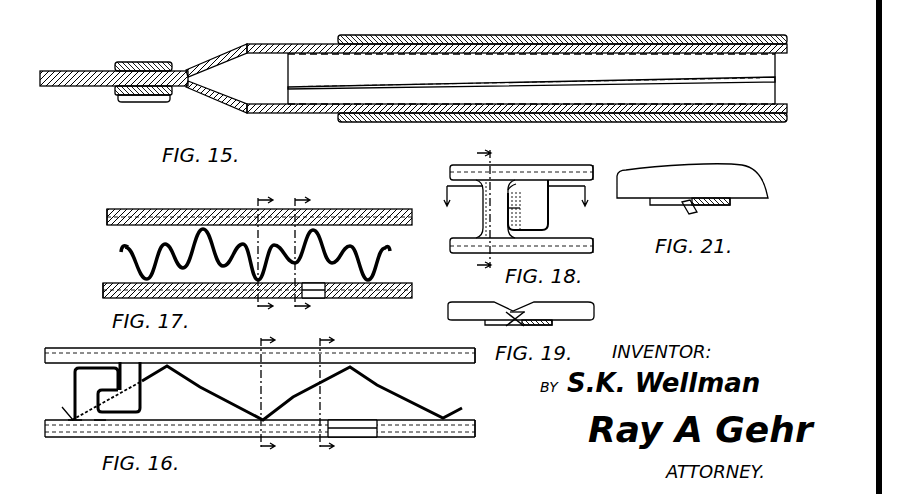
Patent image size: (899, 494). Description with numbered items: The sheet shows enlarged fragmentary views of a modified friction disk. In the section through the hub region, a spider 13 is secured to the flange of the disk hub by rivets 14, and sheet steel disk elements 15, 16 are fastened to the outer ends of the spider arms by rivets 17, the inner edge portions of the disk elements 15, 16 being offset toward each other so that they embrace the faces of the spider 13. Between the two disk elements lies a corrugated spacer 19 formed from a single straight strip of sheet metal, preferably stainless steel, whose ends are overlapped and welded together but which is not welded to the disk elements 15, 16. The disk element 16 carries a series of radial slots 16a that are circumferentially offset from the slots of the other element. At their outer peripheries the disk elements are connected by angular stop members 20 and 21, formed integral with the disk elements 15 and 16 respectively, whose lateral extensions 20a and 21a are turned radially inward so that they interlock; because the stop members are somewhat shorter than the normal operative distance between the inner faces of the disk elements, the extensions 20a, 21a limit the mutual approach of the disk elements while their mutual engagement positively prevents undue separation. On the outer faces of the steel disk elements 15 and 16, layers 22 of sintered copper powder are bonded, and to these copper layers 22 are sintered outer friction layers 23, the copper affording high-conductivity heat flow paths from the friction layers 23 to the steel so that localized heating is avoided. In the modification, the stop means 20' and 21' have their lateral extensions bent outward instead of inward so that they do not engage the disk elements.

In FIG. 15, the spider 13 is at (76, 71).
In FIG. 17, the rivets 14 is at (267, 254).
In FIG. 16, the rivets 14 is at (279, 393).
In FIG. 15, the disk element 15 is at (258, 44).
In FIG. 17, the disk element 15 is at (107, 227).
In FIG. 16, the disk element 15 is at (460, 363).
In FIG. 18, the disk element 15 is at (596, 176).
In FIG. 15, the disk element 16 is at (256, 113).
In FIG. 17, the disk element 16 is at (104, 283).
In FIG. 16, the disk element 16 is at (467, 420).
In FIG. 18, the disk element 16 is at (596, 242).
In FIG. 19, the disk element 16 is at (584, 312).
In FIG. 17, the radial slots 16a is at (316, 298).
In FIG. 16, the radial slots 16a is at (360, 437).
In FIG. 15, the rivets 17 is at (139, 62).
In FIG. 15, the corrugated spacer 19 is at (765, 88).
In FIG. 17, the corrugated spacer 19 is at (123, 258).
In FIG. 16, the corrugated spacer 19 is at (210, 388).
In FIG. 18, the corrugated spacer 19 is at (518, 204).
In FIG. 16, the angular stop member 20 is at (132, 369).
In FIG. 18, the angular stop member 20 is at (525, 209).
In FIG. 19, the angular stop member 20 is at (561, 331).
In FIG. 18, the lateral extension 20a is at (521, 221).
In FIG. 19, the lateral extension 20a is at (500, 312).
In FIG. 16, the angular stop member 21 is at (87, 394).
In FIG. 18, the angular stop member 21 is at (485, 209).
In FIG. 19, the angular stop member 21 is at (494, 330).
In FIG. 18, the lateral extension 21a is at (513, 184).
In FIG. 19, the lateral extension 21a is at (528, 311).
In FIG. 15, the copper layer 22 is at (511, 41).
In FIG. 17, the copper layer 22 is at (164, 209).
In FIG. 16, the copper layer 22 is at (77, 352).
In FIG. 18, the copper layer 22 is at (586, 172).
In FIG. 15, the outer friction layer 23 is at (570, 44).
In FIG. 17, the outer friction layer 23 is at (193, 201).
In FIG. 16, the outer friction layer 23 is at (418, 348).
In FIG. 18, the outer friction layer 23 is at (559, 165).
In FIG. 21, the stop means 21' is at (692, 196).
In FIG. 21, the stop means 20' is at (720, 213).